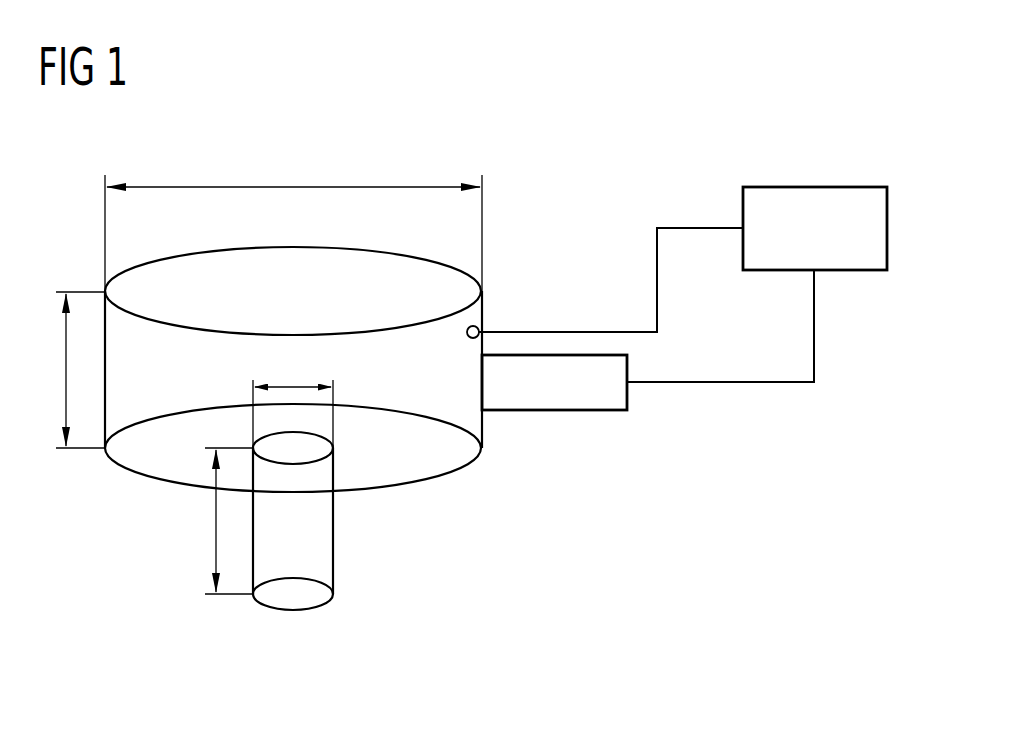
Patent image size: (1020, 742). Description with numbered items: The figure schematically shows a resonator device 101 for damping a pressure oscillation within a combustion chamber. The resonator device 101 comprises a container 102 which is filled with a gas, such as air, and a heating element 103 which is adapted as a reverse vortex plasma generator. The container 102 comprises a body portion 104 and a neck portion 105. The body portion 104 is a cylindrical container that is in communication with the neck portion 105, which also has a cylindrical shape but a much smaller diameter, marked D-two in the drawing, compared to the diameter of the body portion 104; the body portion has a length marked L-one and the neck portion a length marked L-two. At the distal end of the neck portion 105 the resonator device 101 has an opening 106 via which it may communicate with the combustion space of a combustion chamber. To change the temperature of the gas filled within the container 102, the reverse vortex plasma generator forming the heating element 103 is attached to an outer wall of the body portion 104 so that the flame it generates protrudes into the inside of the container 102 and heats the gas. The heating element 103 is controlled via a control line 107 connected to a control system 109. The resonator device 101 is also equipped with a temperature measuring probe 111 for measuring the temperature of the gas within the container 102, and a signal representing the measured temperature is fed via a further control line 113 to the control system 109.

The resonator device 101 is at (560, 157).
The container 102 is at (425, 509).
The heating element 103 is at (560, 410).
The body portion 104 is at (353, 272).
The neck portion 105 is at (322, 533).
The opening 106 is at (299, 617).
The control line 107 is at (708, 382).
The control system 109 is at (815, 187).
The temperature measuring probe 111 is at (480, 330).
The control line 113 is at (688, 228).